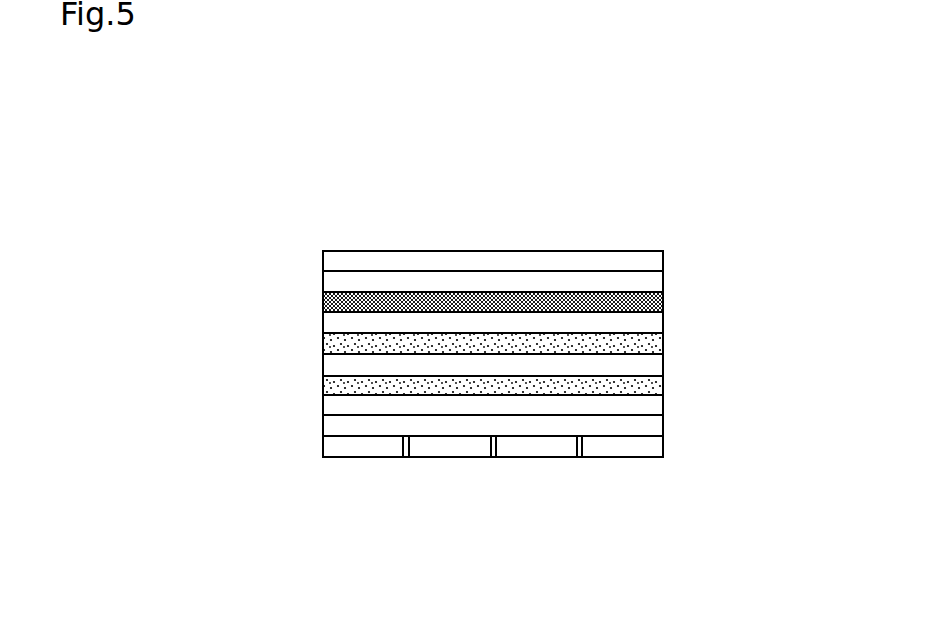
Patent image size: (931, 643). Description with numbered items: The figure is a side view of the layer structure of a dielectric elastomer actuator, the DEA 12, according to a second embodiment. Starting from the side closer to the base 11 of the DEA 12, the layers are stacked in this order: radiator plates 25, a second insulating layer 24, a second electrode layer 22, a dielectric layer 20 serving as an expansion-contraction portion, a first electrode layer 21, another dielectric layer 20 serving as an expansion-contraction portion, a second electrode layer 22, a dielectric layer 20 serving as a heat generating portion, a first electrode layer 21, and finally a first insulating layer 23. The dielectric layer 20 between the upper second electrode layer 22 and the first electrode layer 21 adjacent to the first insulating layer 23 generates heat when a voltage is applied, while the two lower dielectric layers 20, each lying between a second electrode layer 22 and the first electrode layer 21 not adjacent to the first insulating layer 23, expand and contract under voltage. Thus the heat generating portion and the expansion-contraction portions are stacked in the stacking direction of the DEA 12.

The DEA 12 is at (641, 211).
The first insulating layer 23 is at (323, 259).
The first electrode layer 21 is at (323, 283).
The dielectric layer 20 is at (664, 302).
The second electrode layer 22 is at (323, 321).
The second insulating layer 24 is at (323, 427).
The radiator plate 25 is at (435, 458).
The base 11 is at (493, 485).